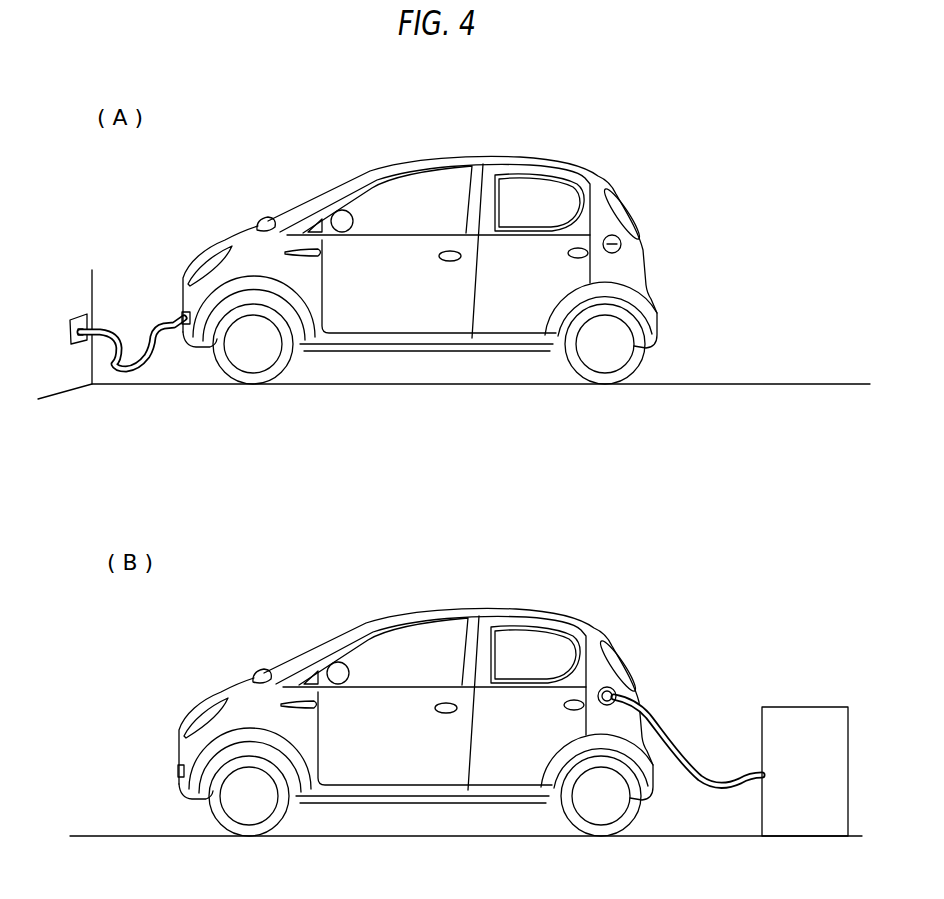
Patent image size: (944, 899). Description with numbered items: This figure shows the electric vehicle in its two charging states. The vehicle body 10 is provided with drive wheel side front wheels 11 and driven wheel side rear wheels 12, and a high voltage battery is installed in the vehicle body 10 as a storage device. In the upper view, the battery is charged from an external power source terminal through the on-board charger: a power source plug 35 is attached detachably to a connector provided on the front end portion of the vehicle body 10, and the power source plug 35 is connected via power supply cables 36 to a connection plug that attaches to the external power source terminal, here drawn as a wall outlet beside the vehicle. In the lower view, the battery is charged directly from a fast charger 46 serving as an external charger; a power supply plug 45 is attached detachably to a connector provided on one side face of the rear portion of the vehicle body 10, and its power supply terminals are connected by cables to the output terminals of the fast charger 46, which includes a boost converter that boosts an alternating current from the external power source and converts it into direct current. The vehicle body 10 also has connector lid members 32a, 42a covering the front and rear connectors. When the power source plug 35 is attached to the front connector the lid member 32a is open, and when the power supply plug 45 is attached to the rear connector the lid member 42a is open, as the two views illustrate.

The vehicle body 10 is at (450, 343).
The front wheels 11 is at (253, 375).
The rear wheels 12 is at (605, 380).
The power source plug 35 is at (182, 340).
The power supply cables 36 is at (120, 372).
The connector lid member 42a is at (621, 244).
The connector lid member 32a is at (177, 771).
The power supply plug 45 is at (612, 691).
The fast charger 46 is at (797, 710).